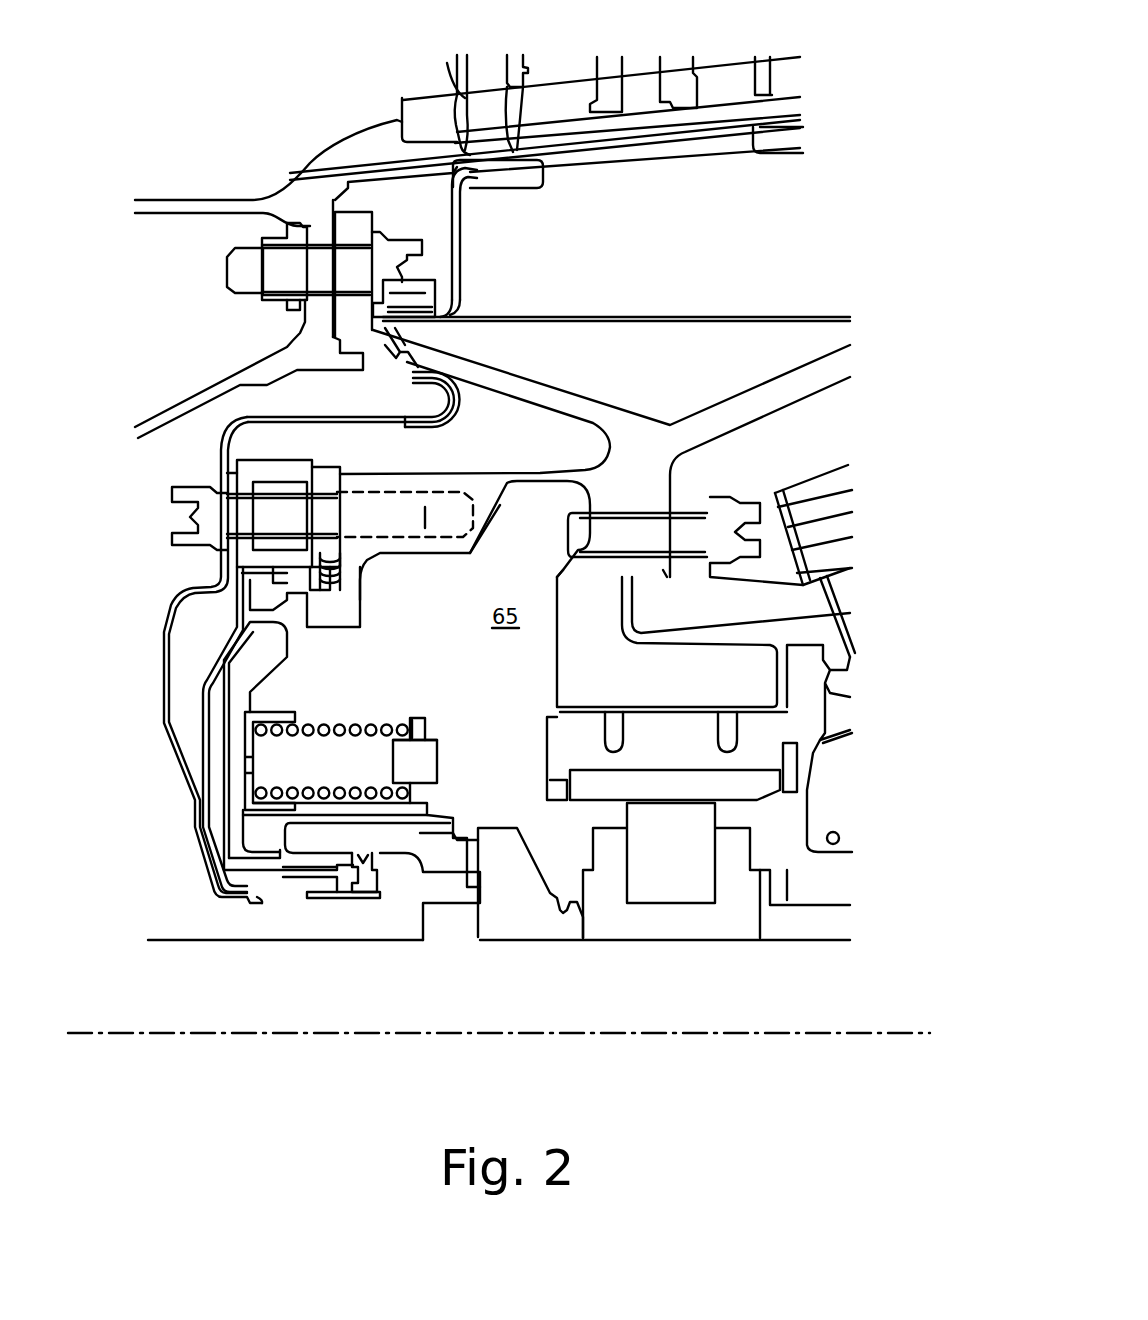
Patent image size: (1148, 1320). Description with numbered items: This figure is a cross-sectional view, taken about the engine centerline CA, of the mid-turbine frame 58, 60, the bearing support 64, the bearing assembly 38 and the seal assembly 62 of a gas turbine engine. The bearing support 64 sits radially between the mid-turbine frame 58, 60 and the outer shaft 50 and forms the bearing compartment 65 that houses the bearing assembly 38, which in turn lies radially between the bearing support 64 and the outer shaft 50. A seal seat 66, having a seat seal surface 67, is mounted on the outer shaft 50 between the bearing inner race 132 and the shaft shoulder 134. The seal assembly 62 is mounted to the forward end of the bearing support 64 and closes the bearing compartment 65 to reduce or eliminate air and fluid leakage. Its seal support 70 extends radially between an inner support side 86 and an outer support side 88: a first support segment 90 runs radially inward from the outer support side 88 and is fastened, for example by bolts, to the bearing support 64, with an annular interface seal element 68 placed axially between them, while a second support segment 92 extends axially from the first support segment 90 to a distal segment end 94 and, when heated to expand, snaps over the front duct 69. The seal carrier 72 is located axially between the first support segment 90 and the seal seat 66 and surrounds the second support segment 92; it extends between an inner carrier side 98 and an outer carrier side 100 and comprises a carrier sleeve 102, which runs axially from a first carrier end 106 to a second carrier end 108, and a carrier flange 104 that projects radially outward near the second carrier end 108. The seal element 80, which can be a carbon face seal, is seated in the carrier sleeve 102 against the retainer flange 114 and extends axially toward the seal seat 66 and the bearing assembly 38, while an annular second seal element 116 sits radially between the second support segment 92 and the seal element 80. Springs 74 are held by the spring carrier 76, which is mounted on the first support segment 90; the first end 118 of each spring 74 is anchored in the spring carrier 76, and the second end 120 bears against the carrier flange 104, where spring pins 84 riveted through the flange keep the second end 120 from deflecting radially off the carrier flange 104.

The bearing assembly 38 is at (778, 821).
The outer shaft 50 is at (770, 990).
The mid-turbine frame 58 is at (333, 138).
The stator vane carrier 60 is at (467, 173).
The seal assembly 62 is at (387, 657).
The bearing support 64 is at (633, 457).
The bearing compartment 65 is at (698, 685).
The seal seat 66 is at (535, 917).
The seat seal surface 67 is at (478, 897).
The interface seal element 68 is at (340, 575).
The front duct 69 is at (263, 894).
The seal support 70 is at (257, 673).
The seal carrier 72 is at (430, 800).
The springs 74 is at (320, 737).
The spring carrier 76 is at (275, 715).
The seal element 80 is at (408, 877).
The spring pins 84 is at (428, 753).
The inner support side 86 is at (322, 900).
The outer support side 88 is at (325, 475).
The first support segment 90 is at (230, 743).
The second support segment 92 is at (337, 873).
The distal segment end 94 is at (388, 892).
The inner carrier side 98 is at (283, 852).
The outer carrier side 100 is at (420, 728).
The carrier sleeve 102 is at (305, 817).
The carrier flange 104 is at (430, 740).
The first carrier end 106 is at (233, 811).
The second carrier end 108 is at (440, 825).
The retainer flange 114 is at (285, 833).
The second seal element 116 is at (365, 866).
The first end 118 is at (257, 800).
The second end 120 is at (412, 722).
The bearing inner race 132 is at (660, 915).
The shaft shoulder 134 is at (452, 920).
The central axis CA is at (180, 1043).